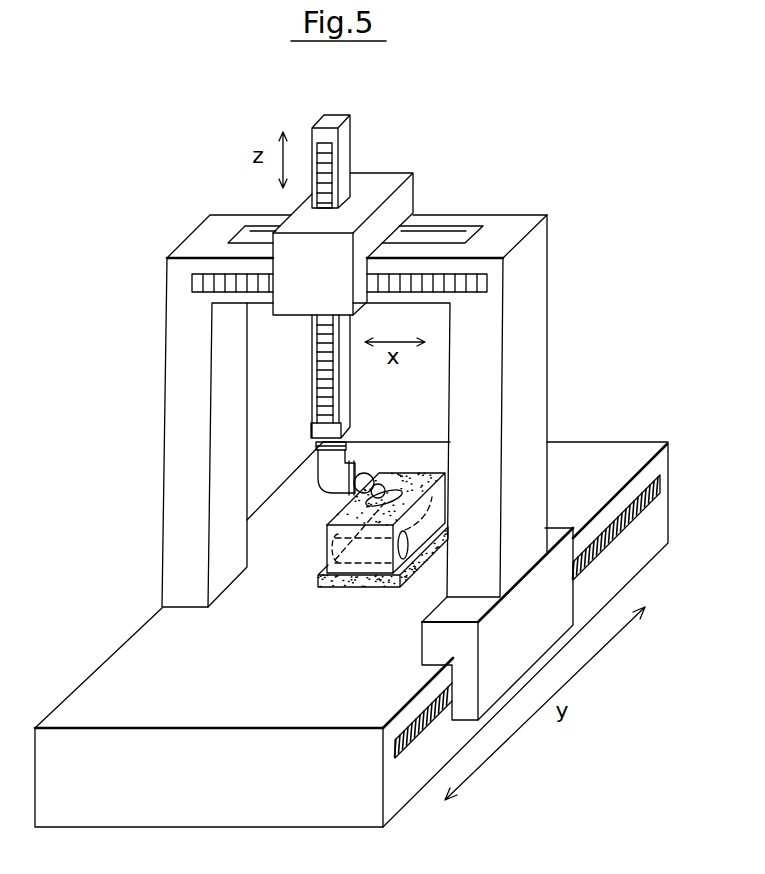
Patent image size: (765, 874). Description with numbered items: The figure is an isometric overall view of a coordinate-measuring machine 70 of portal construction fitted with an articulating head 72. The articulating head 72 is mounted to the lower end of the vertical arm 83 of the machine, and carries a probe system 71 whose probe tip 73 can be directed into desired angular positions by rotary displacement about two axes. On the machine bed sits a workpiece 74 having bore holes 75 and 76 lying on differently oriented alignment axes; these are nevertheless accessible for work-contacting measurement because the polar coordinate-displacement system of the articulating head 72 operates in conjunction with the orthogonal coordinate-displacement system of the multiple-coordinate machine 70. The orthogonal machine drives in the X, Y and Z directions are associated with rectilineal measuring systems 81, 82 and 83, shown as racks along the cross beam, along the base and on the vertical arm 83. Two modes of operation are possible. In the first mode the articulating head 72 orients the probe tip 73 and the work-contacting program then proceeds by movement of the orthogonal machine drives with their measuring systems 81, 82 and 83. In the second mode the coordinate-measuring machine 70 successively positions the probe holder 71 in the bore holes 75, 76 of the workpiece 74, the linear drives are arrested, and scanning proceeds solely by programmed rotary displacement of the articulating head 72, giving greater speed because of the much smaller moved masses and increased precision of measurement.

The coordinate-measuring machine 70 is at (575, 193).
The probe system 71 is at (361, 472).
The articulating head 72 is at (305, 472).
The probe tip 73 is at (398, 492).
The workpiece 74 is at (333, 517).
The bore hole 75 is at (424, 550).
The bore hole 76 is at (394, 480).
The rectilineal measuring system 81 is at (478, 284).
The rectilineal measuring system 82 is at (625, 523).
The vertical arm 83 is at (318, 170).